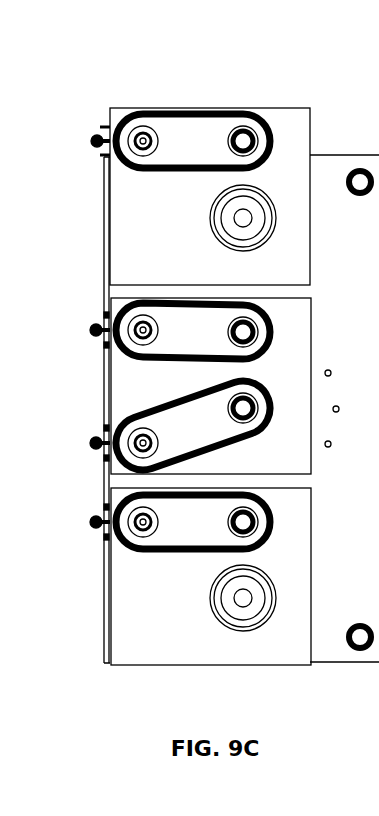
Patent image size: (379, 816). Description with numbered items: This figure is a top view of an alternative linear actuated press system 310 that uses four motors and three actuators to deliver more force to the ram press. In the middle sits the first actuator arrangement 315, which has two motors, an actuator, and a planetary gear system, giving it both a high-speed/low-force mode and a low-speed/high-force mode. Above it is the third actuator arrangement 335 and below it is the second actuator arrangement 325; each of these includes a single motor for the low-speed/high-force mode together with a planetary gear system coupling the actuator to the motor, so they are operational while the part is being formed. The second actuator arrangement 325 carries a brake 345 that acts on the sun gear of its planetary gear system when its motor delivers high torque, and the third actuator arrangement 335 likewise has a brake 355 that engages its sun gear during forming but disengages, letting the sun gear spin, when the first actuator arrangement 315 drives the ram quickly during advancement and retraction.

The linear actuated press system 310 is at (170, 44).
The third actuator arrangement 335 is at (90, 228).
The first actuator arrangement 315 is at (100, 387).
The second actuator arrangement 325 is at (97, 565).
The brake 355 is at (252, 200).
The brake 345 is at (216, 612).